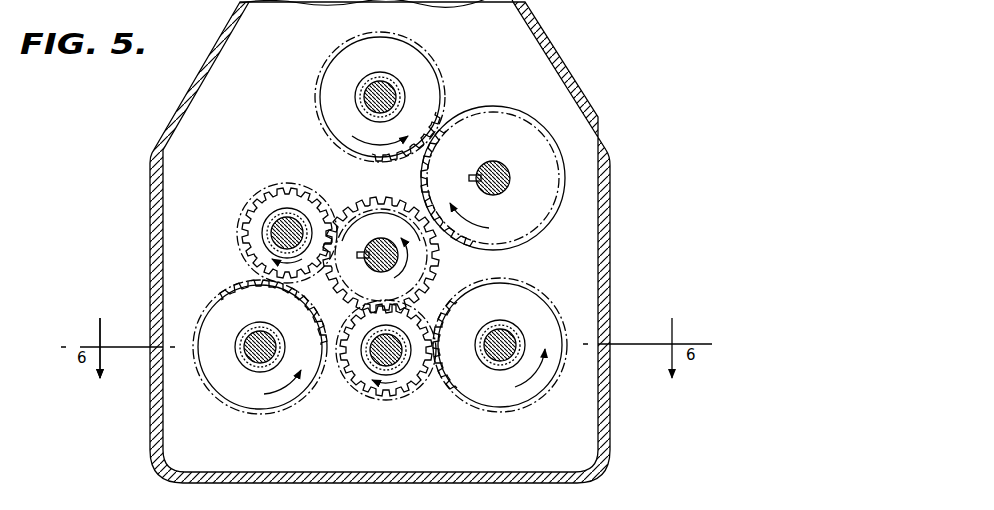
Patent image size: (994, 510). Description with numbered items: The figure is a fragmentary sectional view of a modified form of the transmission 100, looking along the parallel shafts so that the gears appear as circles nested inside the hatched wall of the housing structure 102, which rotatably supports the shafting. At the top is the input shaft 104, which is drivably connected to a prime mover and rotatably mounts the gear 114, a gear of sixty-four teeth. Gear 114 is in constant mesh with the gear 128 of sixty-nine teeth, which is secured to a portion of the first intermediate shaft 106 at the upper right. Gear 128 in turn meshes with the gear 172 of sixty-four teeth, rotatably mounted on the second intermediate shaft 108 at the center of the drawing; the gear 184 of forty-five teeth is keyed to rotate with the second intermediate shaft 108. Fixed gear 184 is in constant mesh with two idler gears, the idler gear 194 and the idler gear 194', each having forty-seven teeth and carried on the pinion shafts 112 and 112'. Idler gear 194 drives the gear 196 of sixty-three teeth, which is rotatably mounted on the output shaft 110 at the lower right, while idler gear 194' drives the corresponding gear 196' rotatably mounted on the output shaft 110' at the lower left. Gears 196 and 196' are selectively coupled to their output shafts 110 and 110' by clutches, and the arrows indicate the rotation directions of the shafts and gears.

The transmission 100 is at (609, 122).
The housing structure 102 is at (610, 446).
The input shaft 104 is at (396, 92).
The first intermediate shaft 106 is at (494, 162).
The second intermediate shaft 108 is at (387, 254).
The output shaft 110 is at (497, 365).
The output shaft 110' is at (262, 363).
The pinion shaft 112 is at (384, 376).
The pinion shaft 112' is at (283, 203).
The gear 114 is at (340, 70).
The gear 128 is at (530, 220).
The gear 172 is at (443, 264).
The gear 184 is at (357, 222).
The idler gear 194 is at (376, 356).
The idler gear 194' is at (274, 233).
The gear 196 is at (502, 351).
The gear 196' is at (255, 347).